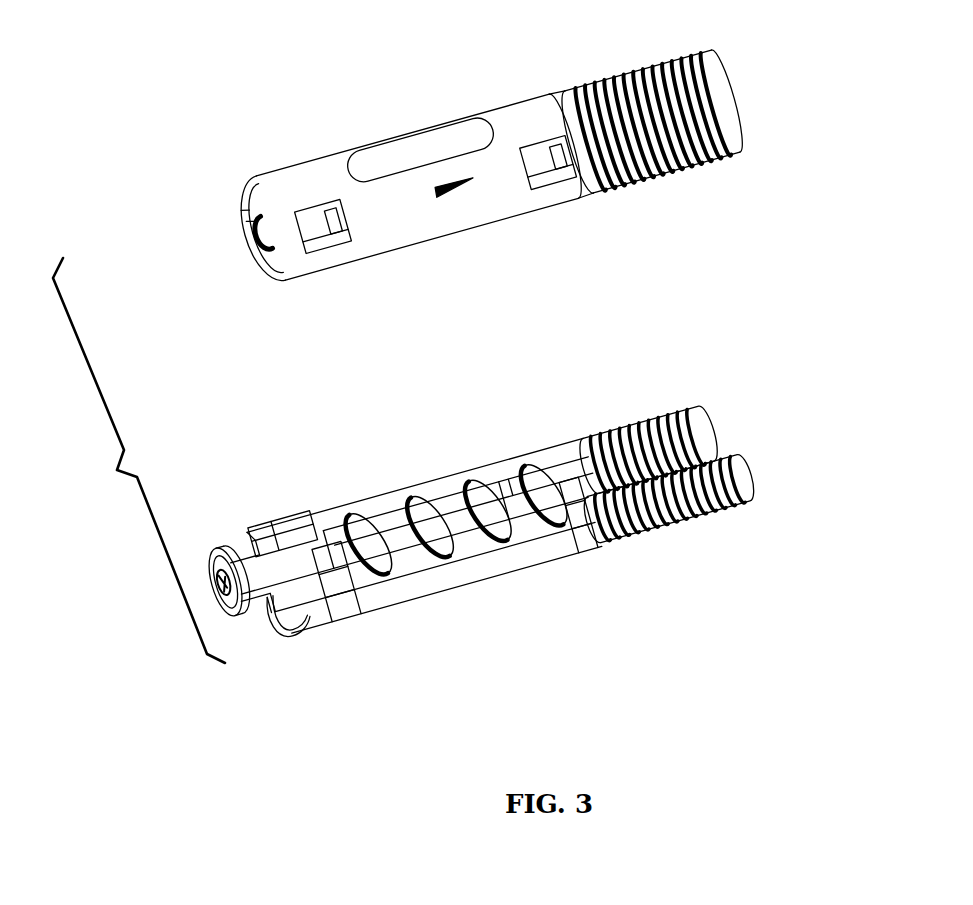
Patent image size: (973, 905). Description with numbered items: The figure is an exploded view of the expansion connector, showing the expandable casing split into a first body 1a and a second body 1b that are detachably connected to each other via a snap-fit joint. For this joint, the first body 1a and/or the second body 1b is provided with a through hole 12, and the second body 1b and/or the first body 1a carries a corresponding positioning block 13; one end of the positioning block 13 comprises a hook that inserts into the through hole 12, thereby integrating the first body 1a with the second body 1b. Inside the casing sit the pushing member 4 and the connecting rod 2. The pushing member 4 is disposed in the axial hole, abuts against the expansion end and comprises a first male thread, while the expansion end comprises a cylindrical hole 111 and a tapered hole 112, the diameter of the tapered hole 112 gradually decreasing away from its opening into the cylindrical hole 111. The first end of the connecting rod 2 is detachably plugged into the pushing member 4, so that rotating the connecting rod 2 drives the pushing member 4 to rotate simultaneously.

The first body 1a is at (763, 90).
The second body 1b is at (782, 428).
The connecting rod 2 is at (423, 528).
The pushing member 4 is at (580, 442).
The through hole 12 is at (323, 237).
The positioning block 13 is at (335, 568).
The cylindrical hole 111 is at (623, 507).
The tapered hole 112 is at (715, 512).